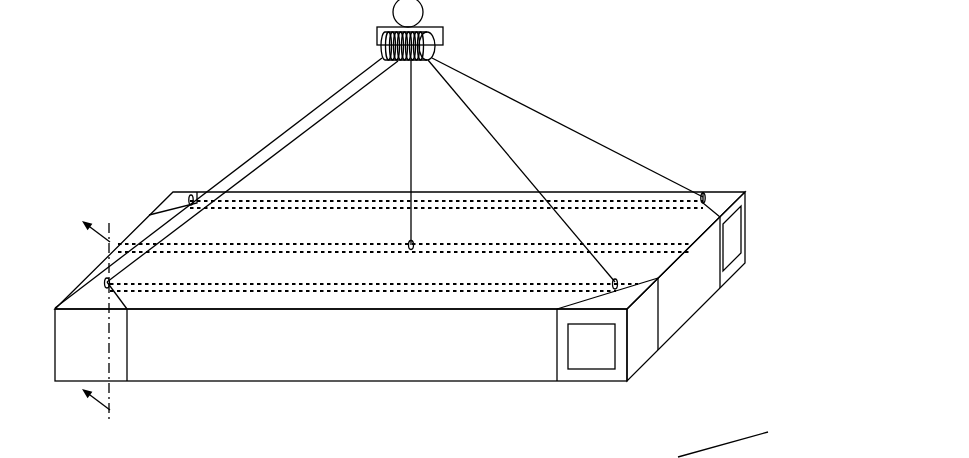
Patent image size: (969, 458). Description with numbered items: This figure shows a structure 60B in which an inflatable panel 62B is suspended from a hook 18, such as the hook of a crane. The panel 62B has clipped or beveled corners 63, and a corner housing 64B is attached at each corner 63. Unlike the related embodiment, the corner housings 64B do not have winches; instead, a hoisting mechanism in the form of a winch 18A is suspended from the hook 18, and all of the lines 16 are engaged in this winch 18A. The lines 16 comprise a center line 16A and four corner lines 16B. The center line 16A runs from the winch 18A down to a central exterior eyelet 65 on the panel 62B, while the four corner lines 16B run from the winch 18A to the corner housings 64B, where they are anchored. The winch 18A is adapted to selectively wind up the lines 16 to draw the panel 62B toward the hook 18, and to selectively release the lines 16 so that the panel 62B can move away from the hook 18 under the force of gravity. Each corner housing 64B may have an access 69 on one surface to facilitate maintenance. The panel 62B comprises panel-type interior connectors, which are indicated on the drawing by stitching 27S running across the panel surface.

The hook 18 is at (408, 30).
The winch 18A is at (354, 47).
The lines 16 is at (379, 183).
The center line 16A is at (411, 115).
The corner lines 16B is at (297, 127).
The structure 60B is at (697, 90).
The panel 62B is at (293, 362).
The corner housings 64B is at (175, 195).
The corners 63 is at (162, 215).
The central exterior eyelet 65 is at (409, 246).
The access 69 is at (738, 268).
The stitching 27S is at (227, 292).